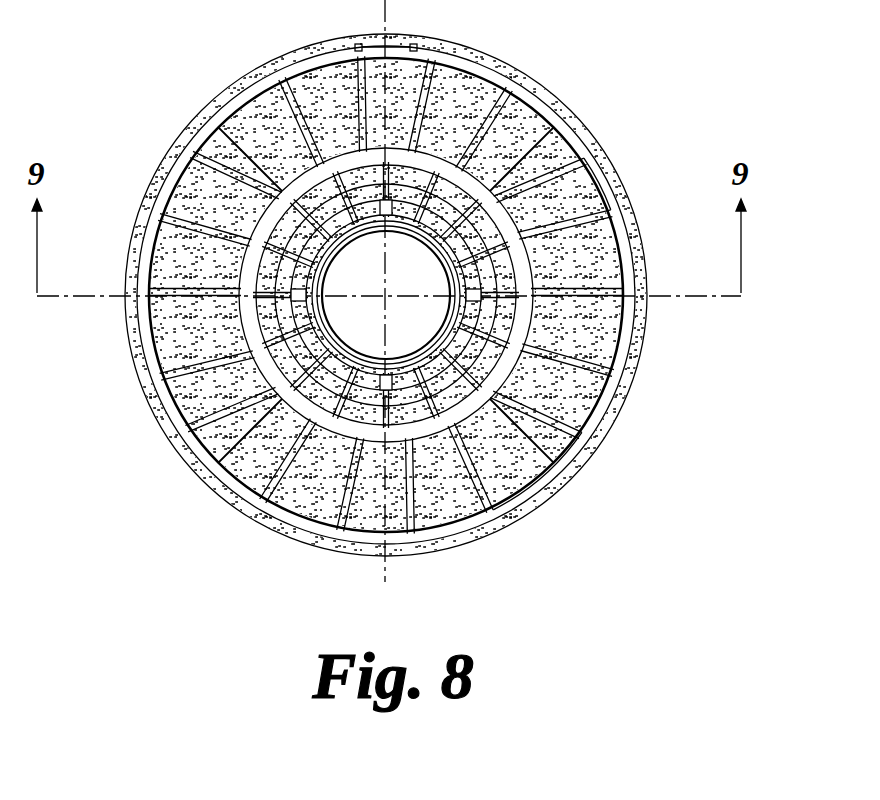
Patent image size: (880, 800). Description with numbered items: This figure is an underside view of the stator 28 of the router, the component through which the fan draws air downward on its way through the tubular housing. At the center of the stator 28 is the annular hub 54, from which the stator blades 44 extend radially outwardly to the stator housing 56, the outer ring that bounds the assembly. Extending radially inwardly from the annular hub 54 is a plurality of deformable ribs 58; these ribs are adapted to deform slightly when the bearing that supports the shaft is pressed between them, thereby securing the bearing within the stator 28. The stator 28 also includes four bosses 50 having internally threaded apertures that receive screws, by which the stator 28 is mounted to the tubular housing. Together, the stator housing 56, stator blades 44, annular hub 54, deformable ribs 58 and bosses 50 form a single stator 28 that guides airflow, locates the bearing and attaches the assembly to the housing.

The stator 28 is at (170, 461).
The stator blades 44 is at (575, 175).
The bosses 50 is at (516, 123).
The annular hub 54 is at (559, 427).
The stator housing 56 is at (595, 379).
The deformable ribs 58 is at (233, 125).